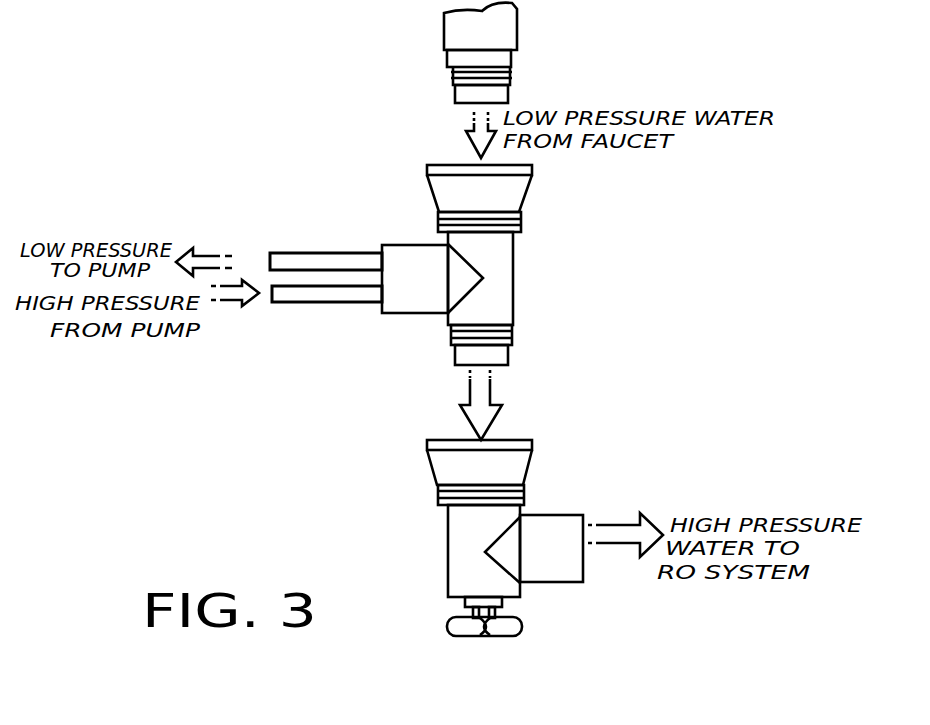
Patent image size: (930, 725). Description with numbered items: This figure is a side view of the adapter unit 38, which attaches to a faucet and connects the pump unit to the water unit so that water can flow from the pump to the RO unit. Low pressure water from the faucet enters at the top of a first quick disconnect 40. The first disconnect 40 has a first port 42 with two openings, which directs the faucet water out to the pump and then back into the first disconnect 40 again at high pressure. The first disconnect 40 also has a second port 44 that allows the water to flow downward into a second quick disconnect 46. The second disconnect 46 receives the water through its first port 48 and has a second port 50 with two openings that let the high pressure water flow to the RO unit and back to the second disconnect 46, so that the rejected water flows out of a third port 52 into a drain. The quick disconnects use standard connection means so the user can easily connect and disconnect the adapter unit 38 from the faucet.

The adapter unit 38 is at (570, 291).
The first quick disconnect 40 is at (500, 243).
The first port 42 is at (393, 255).
The second port 44 is at (500, 352).
The second quick disconnect 46 is at (458, 522).
The first port 48 is at (522, 455).
The second port 50 is at (570, 572).
The third port 52 is at (487, 629).